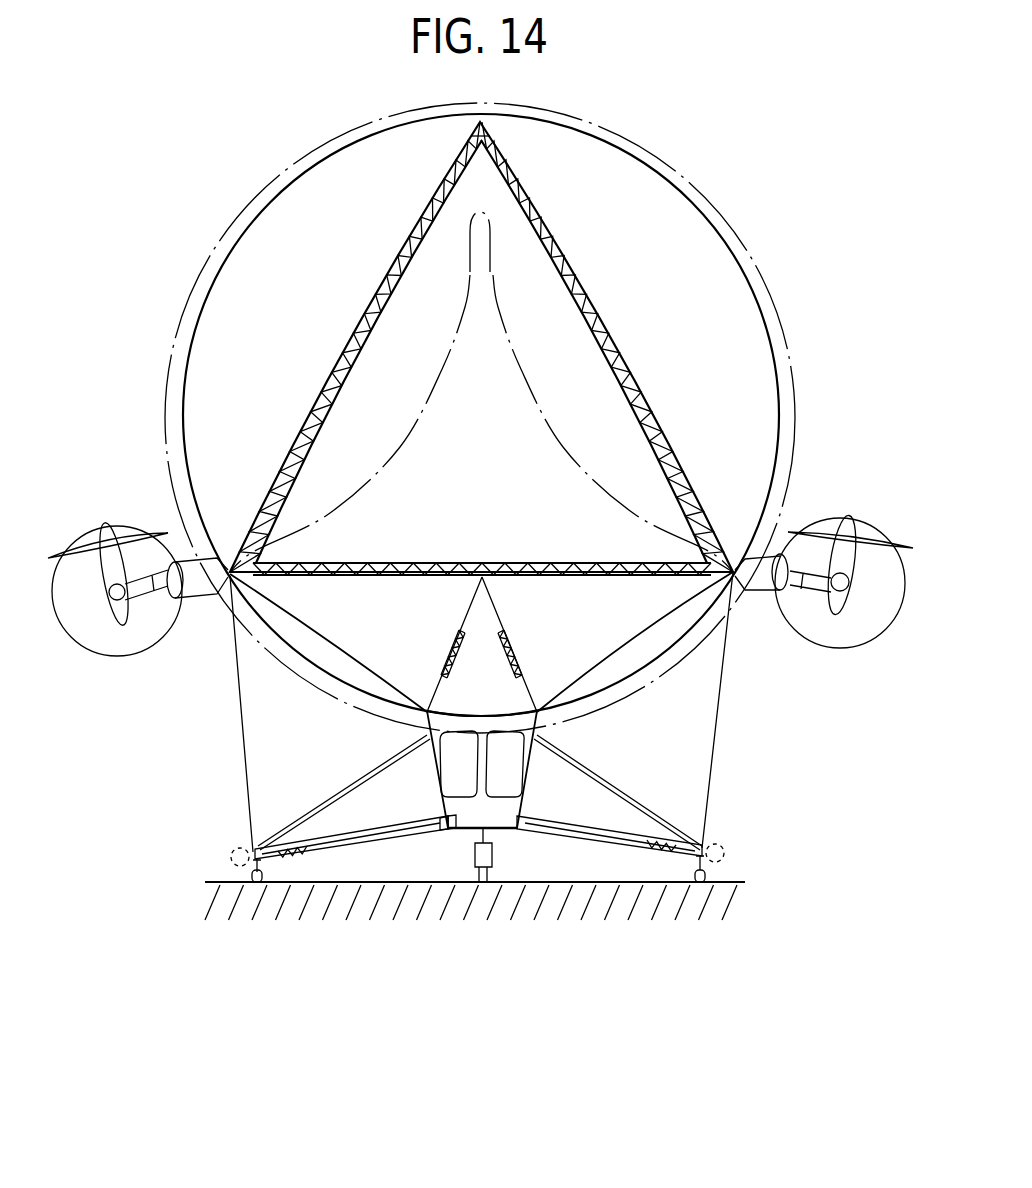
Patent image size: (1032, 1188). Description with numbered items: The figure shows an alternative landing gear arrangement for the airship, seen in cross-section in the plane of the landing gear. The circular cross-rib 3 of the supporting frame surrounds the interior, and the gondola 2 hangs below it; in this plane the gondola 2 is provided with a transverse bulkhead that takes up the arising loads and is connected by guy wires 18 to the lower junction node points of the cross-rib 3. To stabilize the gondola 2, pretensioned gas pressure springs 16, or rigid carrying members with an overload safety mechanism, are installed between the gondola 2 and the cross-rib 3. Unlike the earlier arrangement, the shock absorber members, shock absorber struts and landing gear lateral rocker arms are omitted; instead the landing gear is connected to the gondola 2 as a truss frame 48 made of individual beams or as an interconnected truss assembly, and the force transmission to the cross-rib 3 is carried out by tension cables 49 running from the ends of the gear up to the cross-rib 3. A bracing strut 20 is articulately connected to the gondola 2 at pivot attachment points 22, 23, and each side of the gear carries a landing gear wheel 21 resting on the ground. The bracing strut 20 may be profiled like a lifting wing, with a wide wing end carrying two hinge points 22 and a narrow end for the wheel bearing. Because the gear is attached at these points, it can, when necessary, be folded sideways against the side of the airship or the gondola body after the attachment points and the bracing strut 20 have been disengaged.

The gondola 2 is at (500, 807).
The cross-rib 3 is at (691, 565).
The pretensioned gas pressure spring 16 is at (495, 655).
The guy wire 18 is at (627, 640).
The bracing strut 20 is at (571, 835).
The landing gear wheel 21 is at (724, 853).
The pivot attachment point 22 is at (448, 825).
The pivot attachment point 23 is at (436, 909).
The truss frame 48 is at (638, 833).
The tension cable 49 is at (717, 703).